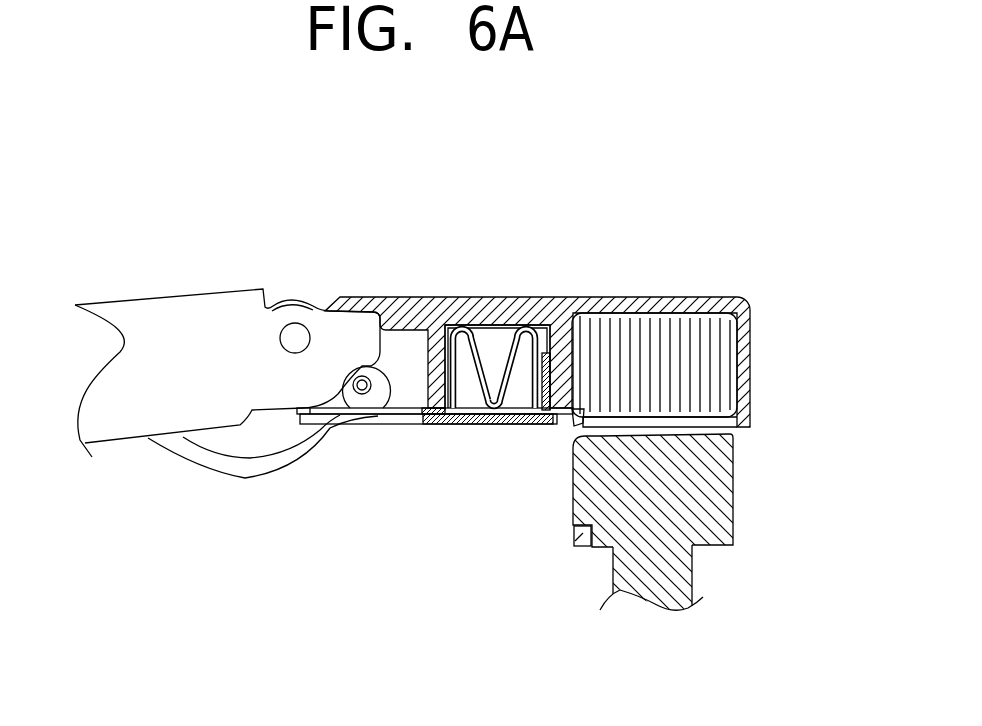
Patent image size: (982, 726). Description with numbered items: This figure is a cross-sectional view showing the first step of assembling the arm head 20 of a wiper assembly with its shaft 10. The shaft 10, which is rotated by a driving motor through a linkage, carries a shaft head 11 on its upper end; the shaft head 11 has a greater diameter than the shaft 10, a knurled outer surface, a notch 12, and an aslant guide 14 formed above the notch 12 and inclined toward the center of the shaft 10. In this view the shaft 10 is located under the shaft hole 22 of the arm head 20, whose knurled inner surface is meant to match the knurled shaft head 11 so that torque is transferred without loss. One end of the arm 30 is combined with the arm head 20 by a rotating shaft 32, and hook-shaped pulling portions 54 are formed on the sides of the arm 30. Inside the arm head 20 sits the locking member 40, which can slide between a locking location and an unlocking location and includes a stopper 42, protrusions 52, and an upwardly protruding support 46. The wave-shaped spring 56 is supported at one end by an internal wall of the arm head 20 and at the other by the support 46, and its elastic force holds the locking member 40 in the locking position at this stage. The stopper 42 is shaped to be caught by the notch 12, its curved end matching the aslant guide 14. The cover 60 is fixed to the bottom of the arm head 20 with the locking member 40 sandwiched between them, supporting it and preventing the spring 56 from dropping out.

The shaft 10 is at (705, 580).
The shaft head 11 is at (727, 488).
The notch 12 is at (577, 545).
The aslant guide 14 is at (588, 448).
The arm head 20 is at (575, 297).
The shaft hole 22 is at (730, 366).
The arm 30 is at (165, 297).
The rotating shaft 32 is at (297, 333).
The locking member 40 is at (377, 418).
The stopper 42 is at (575, 417).
The support 46 is at (523, 413).
The protrusions 52 is at (303, 413).
The pulling portions 54 is at (370, 364).
The spring 56 is at (478, 372).
The cover 60 is at (445, 425).